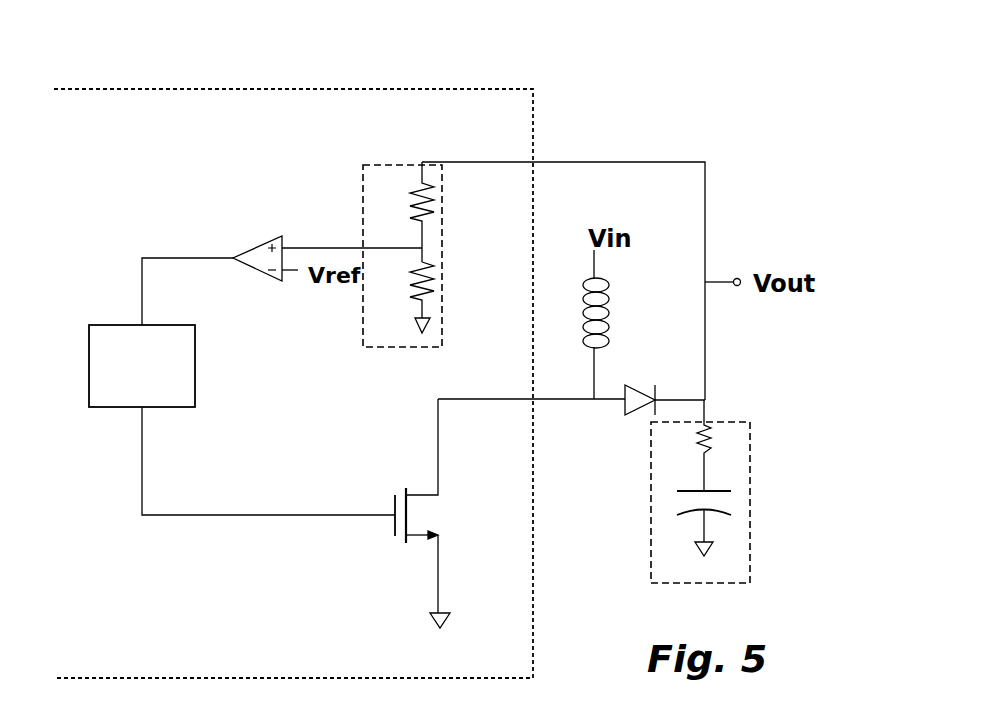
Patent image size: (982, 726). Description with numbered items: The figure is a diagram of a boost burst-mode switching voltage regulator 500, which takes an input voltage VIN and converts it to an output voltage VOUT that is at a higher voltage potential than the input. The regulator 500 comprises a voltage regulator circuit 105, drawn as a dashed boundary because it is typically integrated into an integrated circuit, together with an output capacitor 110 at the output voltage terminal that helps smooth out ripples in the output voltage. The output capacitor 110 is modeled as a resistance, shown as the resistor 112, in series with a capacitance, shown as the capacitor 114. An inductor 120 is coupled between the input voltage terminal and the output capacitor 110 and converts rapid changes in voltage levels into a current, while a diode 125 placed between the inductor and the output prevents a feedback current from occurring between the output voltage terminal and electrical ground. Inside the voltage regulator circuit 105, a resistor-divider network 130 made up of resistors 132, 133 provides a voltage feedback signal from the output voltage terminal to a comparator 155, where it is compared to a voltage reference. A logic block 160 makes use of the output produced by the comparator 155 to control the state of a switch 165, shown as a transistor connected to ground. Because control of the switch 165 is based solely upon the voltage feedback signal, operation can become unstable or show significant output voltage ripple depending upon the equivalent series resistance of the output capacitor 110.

The boost burst-mode switching voltage regulator 500 is at (706, 84).
The voltage regulator circuit 105 is at (245, 84).
The comparator 155 is at (258, 249).
The logic block 160 is at (197, 347).
The switch 165 is at (443, 517).
The resistor-divider network 130 is at (360, 318).
The resistor 132 is at (410, 200).
The resistor 133 is at (410, 292).
The inductor 120 is at (585, 323).
The diode 125 is at (625, 412).
The output capacitor 110 is at (720, 583).
The resistor 112 is at (697, 443).
The capacitor 114 is at (695, 527).